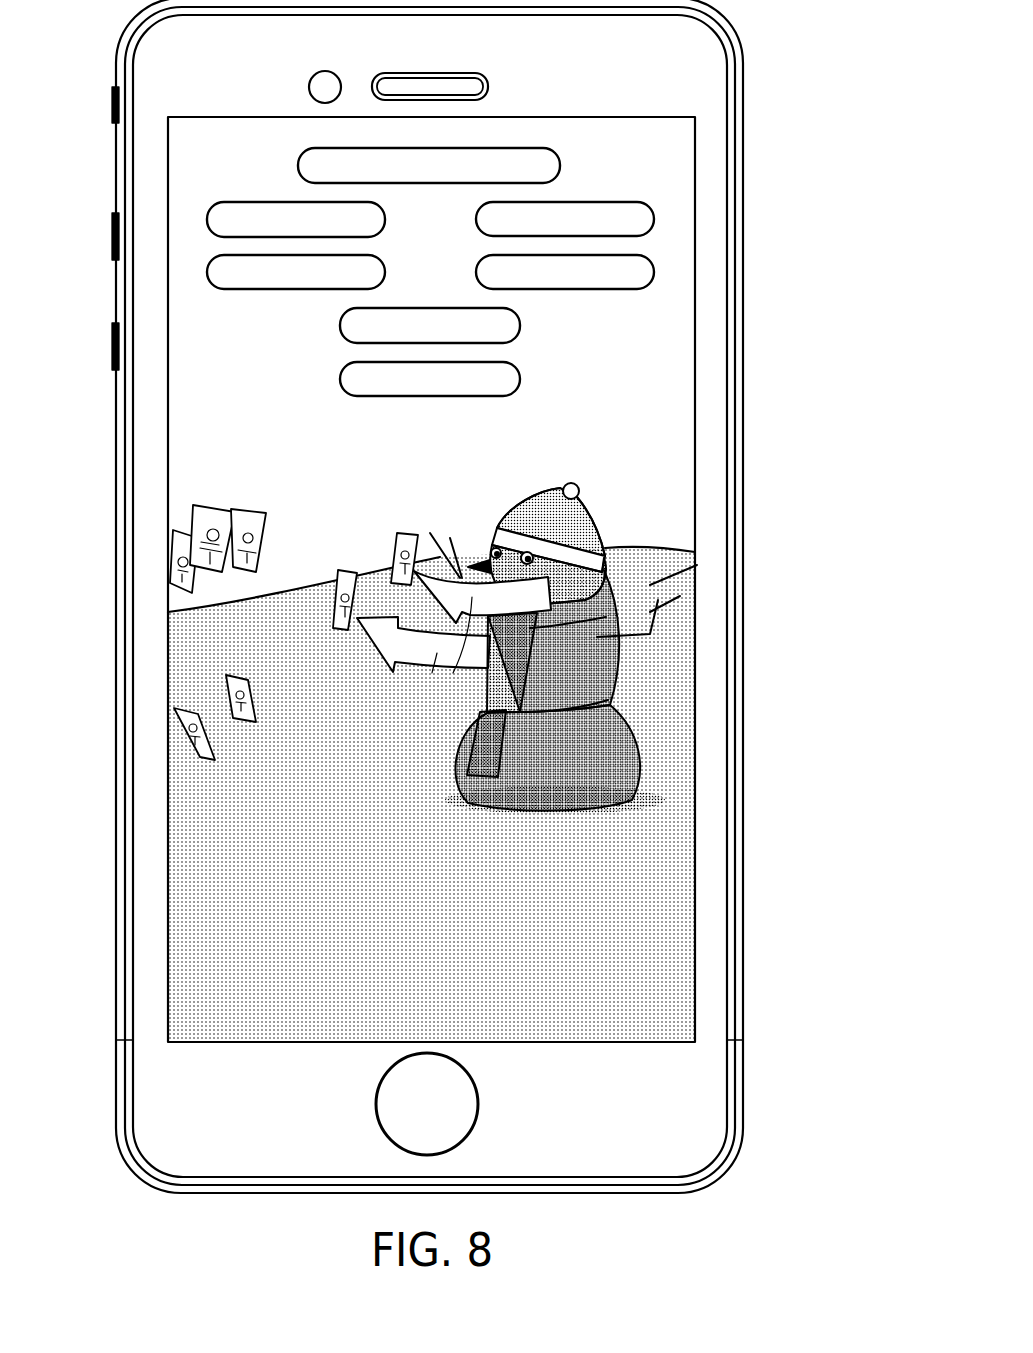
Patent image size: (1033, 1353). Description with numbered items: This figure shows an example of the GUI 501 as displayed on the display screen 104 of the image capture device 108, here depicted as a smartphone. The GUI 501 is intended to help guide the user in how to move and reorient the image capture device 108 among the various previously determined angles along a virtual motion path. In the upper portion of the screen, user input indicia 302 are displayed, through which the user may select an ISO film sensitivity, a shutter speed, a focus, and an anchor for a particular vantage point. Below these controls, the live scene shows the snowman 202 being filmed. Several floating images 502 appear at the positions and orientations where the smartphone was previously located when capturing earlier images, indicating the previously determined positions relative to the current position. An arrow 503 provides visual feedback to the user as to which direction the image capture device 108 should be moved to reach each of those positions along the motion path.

The display screen 104 is at (193, 152).
The image capture device 108 is at (740, 73).
The user input indicia 302 is at (647, 398).
The GUI 501 is at (192, 365).
The floating image 502 is at (410, 533).
The arrow 503 is at (470, 598).
The snowman 202 is at (568, 490).